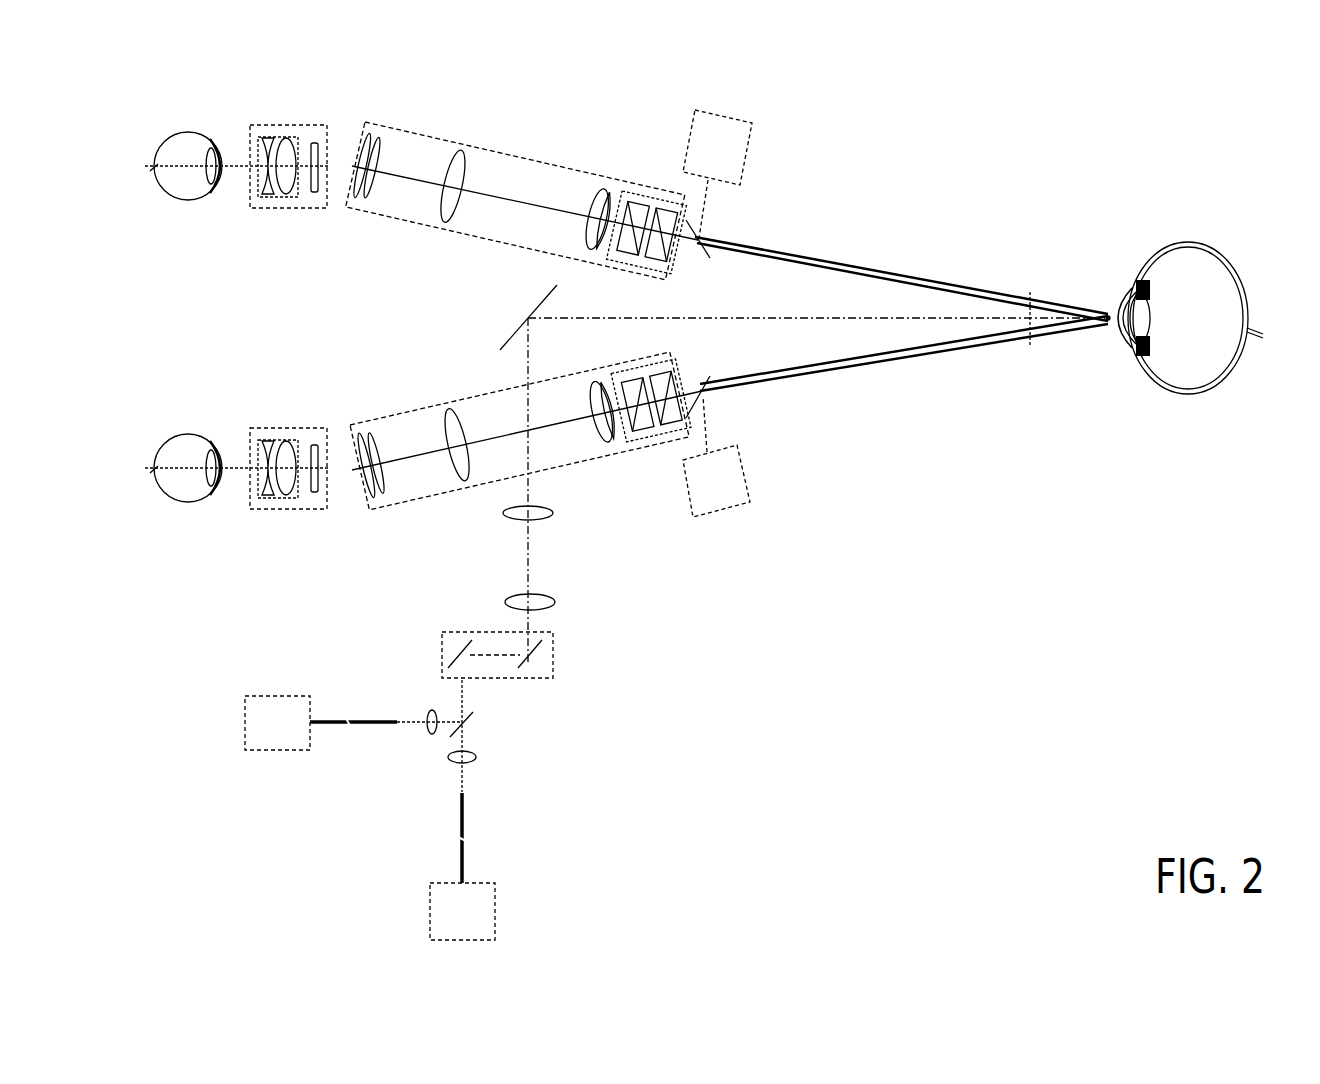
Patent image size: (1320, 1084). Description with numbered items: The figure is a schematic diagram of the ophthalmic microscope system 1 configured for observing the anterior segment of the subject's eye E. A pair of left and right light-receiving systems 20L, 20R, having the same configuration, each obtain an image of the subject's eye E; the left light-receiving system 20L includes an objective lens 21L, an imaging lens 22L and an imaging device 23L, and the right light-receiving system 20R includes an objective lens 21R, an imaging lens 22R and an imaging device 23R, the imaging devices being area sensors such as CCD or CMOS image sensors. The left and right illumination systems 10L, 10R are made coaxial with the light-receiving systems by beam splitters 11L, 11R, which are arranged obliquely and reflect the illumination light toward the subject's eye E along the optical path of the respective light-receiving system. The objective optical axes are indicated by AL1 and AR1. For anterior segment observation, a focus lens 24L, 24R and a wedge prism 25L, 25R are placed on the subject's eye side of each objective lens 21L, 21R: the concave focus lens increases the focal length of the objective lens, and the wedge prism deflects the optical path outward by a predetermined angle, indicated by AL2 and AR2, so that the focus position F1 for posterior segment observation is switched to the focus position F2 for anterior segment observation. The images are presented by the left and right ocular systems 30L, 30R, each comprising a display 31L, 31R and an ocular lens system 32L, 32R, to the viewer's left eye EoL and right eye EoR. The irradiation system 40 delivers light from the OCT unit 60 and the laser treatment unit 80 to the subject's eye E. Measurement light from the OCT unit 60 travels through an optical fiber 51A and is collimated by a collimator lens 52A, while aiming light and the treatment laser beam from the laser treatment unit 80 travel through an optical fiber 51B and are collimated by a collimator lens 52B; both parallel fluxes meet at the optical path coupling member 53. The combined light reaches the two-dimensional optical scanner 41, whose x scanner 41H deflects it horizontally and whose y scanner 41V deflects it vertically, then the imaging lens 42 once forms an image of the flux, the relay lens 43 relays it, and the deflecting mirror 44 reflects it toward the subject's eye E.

The ophthalmic microscope system 1 is at (877, 160).
The viewer's left eye EoL is at (195, 132).
The viewer's right eye EoR is at (195, 432).
The left ocular system 30L is at (293, 124).
The right ocular system 30R is at (293, 427).
The display 31L is at (314, 200).
The display 31R is at (314, 502).
The ocular lens system 32L is at (272, 200).
The ocular lens system 32R is at (272, 502).
The left light-receiving system 20L is at (548, 152).
The right light-receiving system 20R is at (405, 403).
The objective lens 21L is at (611, 180).
The objective lens 21R is at (606, 378).
The imaging lens 22L is at (460, 148).
The imaging lens 22R is at (452, 404).
The imaging device 23L is at (372, 132).
The imaging device 23R is at (360, 426).
The focus lens 24L is at (630, 258).
The focus lens 24R is at (642, 445).
The wedge prism 25L is at (667, 196).
The wedge prism 25R is at (688, 372).
The left illumination system 10L is at (750, 148).
The right illumination system 10R is at (752, 478).
The beam splitter 11L is at (705, 262).
The beam splitter 11R is at (712, 393).
The objective optical axis AL1 is at (888, 272).
The deflected optical axis AL2 is at (974, 283).
The objective optical axis AR1 is at (886, 370).
The deflected optical axis AR2 is at (970, 365).
The subject's eye E is at (1207, 245).
The focus position for posterior eye segment observation F1 is at (1030, 346).
The focus position for anterior eye segment observation F2 is at (1106, 310).
The irradiation system 40 is at (606, 574).
The optical scanner 41 is at (554, 640).
The x scanner 41H is at (446, 644).
The y scanner 41V is at (526, 670).
The imaging lens 42 is at (506, 600).
The relay lens 43 is at (556, 513).
The deflecting mirror 44 is at (530, 296).
The laser treatment unit 80 is at (282, 695).
The optical fiber 51B is at (353, 730).
The collimator lens 52B is at (431, 736).
The optical path coupling member 53 is at (477, 722).
The collimator lens 52A is at (478, 761).
The optical fiber 51A is at (468, 823).
The OCT unit 60 is at (496, 906).